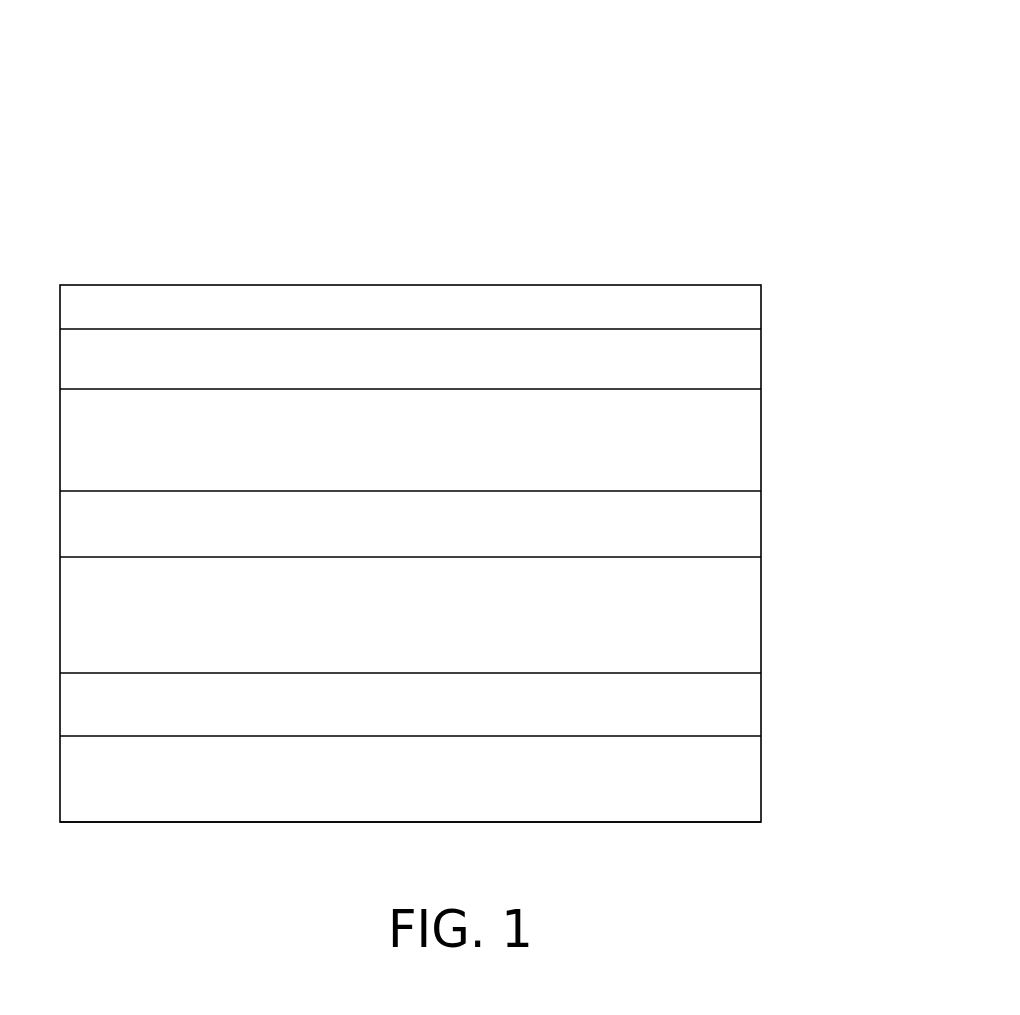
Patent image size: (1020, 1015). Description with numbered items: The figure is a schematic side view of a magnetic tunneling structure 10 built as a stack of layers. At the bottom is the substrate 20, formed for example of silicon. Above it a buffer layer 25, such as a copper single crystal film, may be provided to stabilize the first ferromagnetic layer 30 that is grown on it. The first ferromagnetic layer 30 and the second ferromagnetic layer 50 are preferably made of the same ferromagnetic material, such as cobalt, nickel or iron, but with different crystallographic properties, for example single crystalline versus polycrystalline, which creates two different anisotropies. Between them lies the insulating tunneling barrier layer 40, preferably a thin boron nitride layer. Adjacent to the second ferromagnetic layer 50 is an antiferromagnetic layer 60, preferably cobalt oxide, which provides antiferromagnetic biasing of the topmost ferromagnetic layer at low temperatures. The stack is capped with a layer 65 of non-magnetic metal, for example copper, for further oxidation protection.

The magnetic tunneling structure 10 is at (770, 160).
The substrate 20 is at (713, 778).
The buffer layer 25 is at (713, 716).
The first ferromagnetic layer 30 is at (713, 601).
The insulating tunneling barrier layer 40 is at (713, 532).
The second ferromagnetic layer 50 is at (713, 431).
The antiferromagnetic layer 60 is at (713, 373).
The capping layer of non-magnetic metal 65 is at (713, 313).